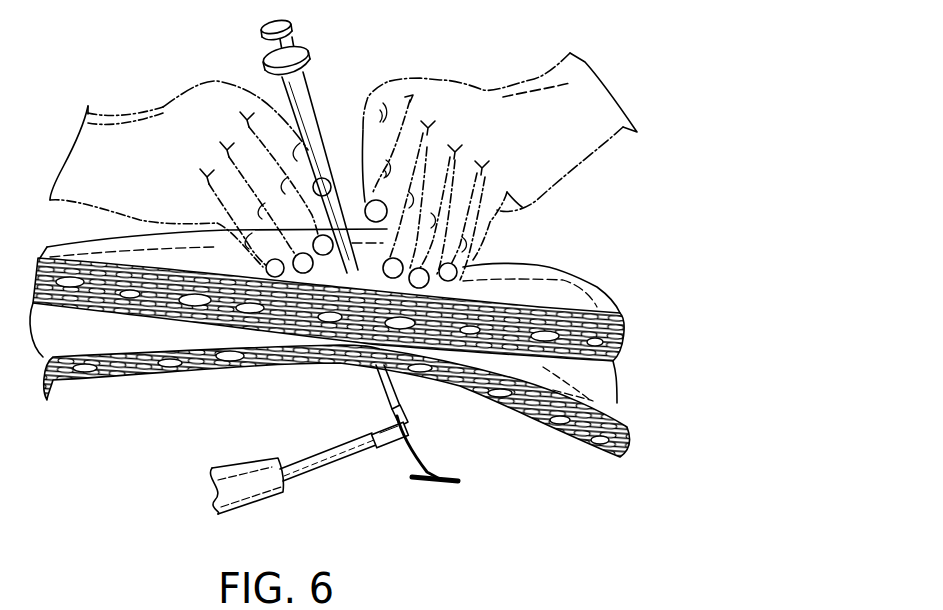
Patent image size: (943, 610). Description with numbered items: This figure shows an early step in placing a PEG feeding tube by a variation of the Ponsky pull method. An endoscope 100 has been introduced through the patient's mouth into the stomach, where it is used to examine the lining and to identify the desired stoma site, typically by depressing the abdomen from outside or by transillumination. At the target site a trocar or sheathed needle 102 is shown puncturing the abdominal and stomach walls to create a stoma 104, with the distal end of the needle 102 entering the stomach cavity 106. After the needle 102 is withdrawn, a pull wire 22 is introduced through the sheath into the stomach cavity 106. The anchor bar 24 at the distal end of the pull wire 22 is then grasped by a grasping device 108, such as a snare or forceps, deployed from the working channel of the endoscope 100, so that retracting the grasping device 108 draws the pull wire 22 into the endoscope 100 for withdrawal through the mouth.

The endoscope 100 is at (216, 478).
The sheathed needle 102 is at (331, 90).
The stoma 104 is at (373, 264).
The stomach cavity 106 is at (290, 427).
The grasping device 108 is at (324, 470).
The pull wire 22 is at (420, 421).
The anchor bar 24 is at (441, 481).